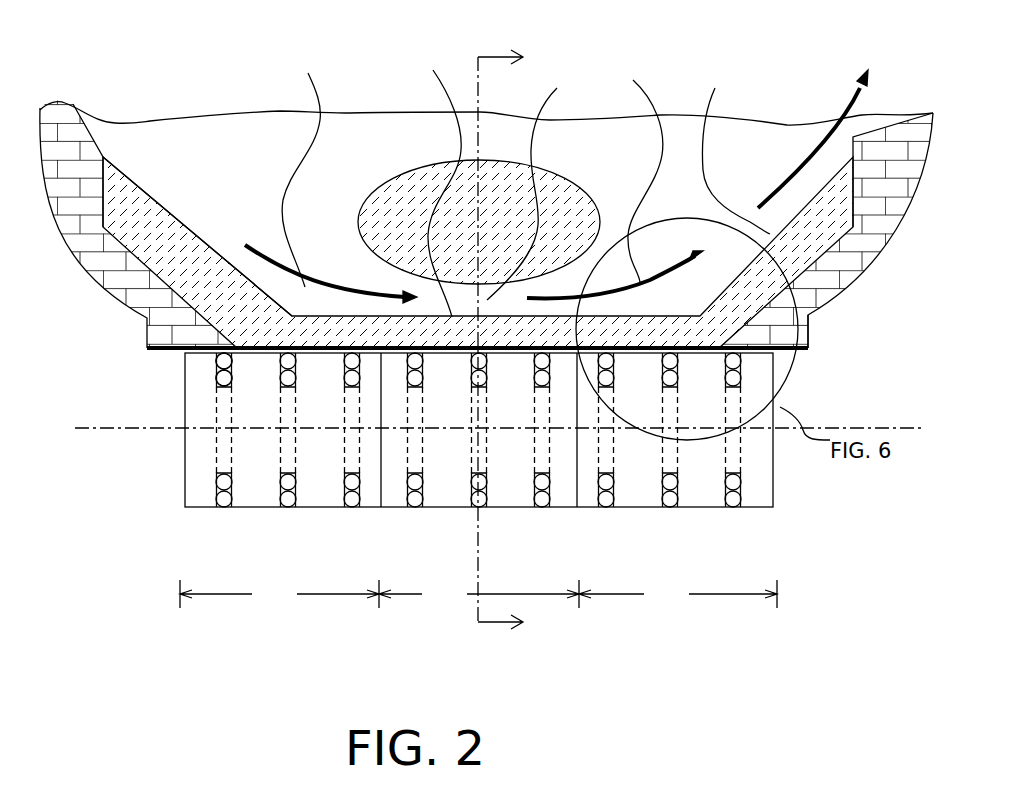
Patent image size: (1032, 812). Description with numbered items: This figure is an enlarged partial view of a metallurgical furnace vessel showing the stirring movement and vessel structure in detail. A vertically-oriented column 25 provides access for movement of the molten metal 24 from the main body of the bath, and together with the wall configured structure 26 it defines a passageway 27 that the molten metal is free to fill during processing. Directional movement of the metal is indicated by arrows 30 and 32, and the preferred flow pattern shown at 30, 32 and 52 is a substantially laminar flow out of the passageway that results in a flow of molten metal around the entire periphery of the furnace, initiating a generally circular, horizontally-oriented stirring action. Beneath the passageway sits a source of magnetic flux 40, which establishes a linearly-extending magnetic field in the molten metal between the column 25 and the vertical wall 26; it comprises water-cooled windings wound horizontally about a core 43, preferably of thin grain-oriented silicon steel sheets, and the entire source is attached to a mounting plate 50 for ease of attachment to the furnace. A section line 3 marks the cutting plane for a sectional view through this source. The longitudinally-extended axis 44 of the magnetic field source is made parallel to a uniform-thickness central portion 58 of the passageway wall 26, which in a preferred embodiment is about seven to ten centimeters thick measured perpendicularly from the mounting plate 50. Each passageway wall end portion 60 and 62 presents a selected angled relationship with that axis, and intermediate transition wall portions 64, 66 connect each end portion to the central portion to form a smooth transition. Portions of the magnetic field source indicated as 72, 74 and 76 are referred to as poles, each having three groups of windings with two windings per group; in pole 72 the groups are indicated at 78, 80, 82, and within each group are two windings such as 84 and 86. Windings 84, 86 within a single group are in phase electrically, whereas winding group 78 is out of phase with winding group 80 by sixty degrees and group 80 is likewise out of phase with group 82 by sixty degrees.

The section line 3- 3 is at (500, 340).
The metal 24 is at (248, 184).
The vertically-oriented column 25 is at (413, 231).
The wall configured structure 26 is at (809, 254).
The passageway 27 is at (530, 179).
The arrow indicating directional movement of molten metal 30 is at (301, 173).
The arrow indicating directional movement of molten metal 32 is at (635, 171).
The source of magnetic flux 40 is at (525, 460).
The core 43 is at (716, 472).
The longitudinally-extended axis 44 is at (865, 427).
The mounting plate 50 is at (801, 352).
The arrow indicating preferred flow pattern of metal 52 is at (815, 165).
The central portion of passageway wall 58 is at (433, 186).
The passageway wall end portion 60 is at (150, 192).
The passageway wall end portion 62 is at (737, 147).
The intermediate transition wall portion 64 is at (290, 312).
The intermediate transition wall portion 66 is at (808, 343).
The pole 72 is at (279, 595).
The pole 74 is at (479, 595).
The pole 76 is at (678, 595).
The winding group 78 is at (180, 460).
The winding group 80 is at (278, 422).
The winding group 82 is at (343, 422).
The winding 84 is at (217, 360).
The winding 86 is at (218, 392).